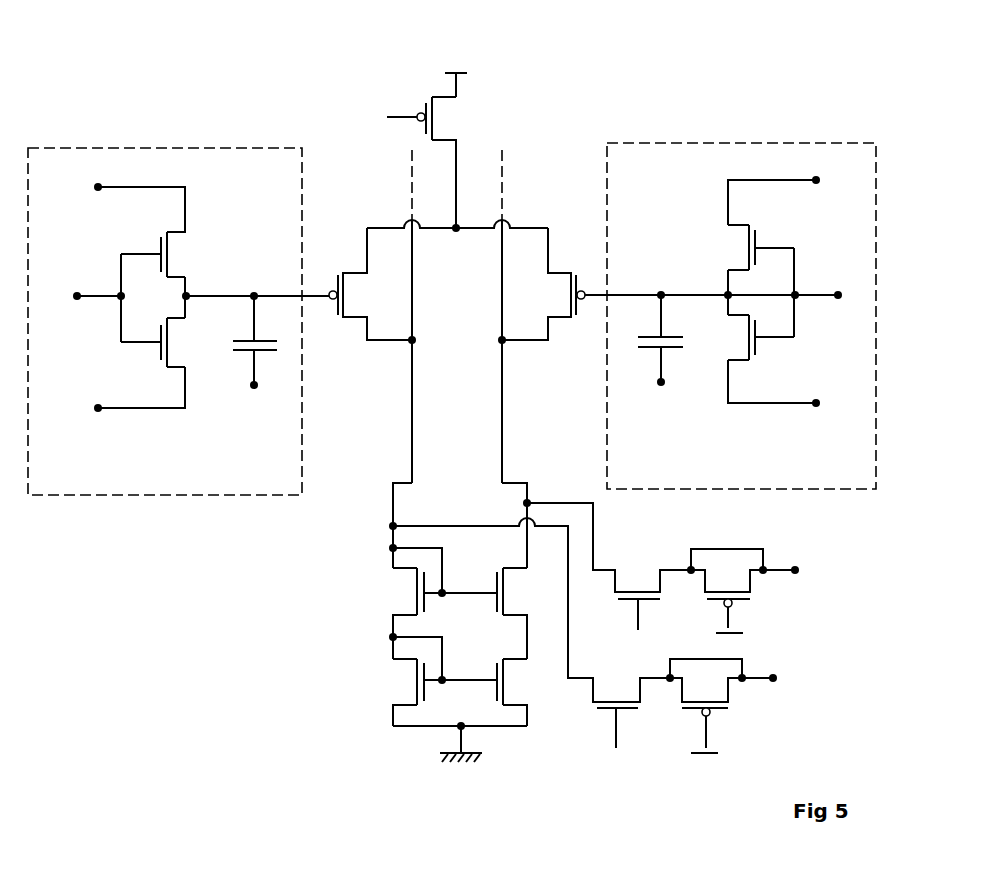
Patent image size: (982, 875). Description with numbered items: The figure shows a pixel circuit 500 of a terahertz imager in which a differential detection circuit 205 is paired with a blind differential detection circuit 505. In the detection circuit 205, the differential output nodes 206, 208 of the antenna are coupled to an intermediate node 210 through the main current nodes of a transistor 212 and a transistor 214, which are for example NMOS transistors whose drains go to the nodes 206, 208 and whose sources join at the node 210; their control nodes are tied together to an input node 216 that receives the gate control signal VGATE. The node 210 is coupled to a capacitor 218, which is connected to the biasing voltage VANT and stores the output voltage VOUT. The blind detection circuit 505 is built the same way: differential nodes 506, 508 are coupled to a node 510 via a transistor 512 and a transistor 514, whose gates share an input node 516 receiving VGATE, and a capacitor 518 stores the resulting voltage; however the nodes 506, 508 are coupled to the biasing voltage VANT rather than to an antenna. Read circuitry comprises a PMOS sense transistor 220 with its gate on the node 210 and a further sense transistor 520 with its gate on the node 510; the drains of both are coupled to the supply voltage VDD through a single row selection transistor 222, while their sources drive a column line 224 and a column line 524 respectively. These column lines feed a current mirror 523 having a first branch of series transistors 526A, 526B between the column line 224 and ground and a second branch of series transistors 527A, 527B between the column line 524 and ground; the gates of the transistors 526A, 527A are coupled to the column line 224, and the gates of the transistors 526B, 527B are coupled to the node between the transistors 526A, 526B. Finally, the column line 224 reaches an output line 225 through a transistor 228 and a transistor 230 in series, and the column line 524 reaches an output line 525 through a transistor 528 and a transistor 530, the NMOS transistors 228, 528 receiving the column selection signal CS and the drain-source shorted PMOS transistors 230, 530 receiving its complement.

The pixel circuit 500 is at (88, 64).
The differential detection circuit 205 is at (200, 148).
The differential output node 206 is at (98, 191).
The differential output node 208 is at (98, 412).
The intermediate node 210 is at (186, 296).
The transistor 212 is at (172, 248).
The transistor 214 is at (178, 358).
The input node 216 is at (77, 300).
The capacitor 218 is at (237, 341).
The sense transistor 220 is at (348, 291).
The row selection transistor 222 is at (440, 117).
The column line 224 is at (414, 384).
The output line 225 is at (776, 673).
The transistor 228 is at (612, 692).
The transistor 230 is at (735, 688).
The blind differential detection circuit 505 is at (797, 143).
The differential node 506 is at (816, 184).
The differential node 508 is at (816, 407).
The intermediate node 510 is at (730, 295).
The transistor 512 is at (745, 248).
The transistor 514 is at (742, 345).
The input node 516 is at (838, 300).
The capacitor 518 is at (666, 337).
The sense transistor 520 is at (568, 292).
The current mirror 523 is at (370, 543).
The column line 524 is at (504, 384).
The output line 525 is at (798, 566).
The transistor 526A is at (407, 594).
The transistor 526B is at (407, 681).
The transistor 527A is at (506, 578).
The transistor 527B is at (518, 688).
The transistor 528 is at (637, 580).
The transistor 530 is at (755, 582).